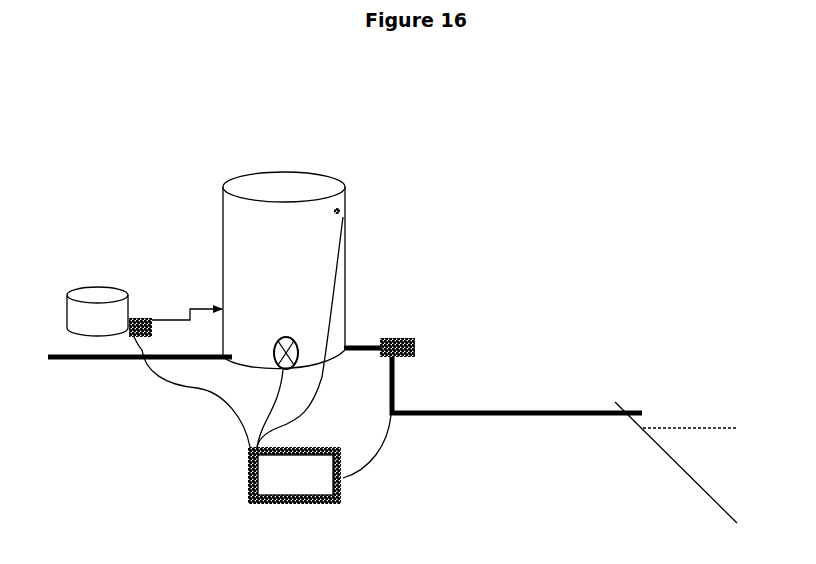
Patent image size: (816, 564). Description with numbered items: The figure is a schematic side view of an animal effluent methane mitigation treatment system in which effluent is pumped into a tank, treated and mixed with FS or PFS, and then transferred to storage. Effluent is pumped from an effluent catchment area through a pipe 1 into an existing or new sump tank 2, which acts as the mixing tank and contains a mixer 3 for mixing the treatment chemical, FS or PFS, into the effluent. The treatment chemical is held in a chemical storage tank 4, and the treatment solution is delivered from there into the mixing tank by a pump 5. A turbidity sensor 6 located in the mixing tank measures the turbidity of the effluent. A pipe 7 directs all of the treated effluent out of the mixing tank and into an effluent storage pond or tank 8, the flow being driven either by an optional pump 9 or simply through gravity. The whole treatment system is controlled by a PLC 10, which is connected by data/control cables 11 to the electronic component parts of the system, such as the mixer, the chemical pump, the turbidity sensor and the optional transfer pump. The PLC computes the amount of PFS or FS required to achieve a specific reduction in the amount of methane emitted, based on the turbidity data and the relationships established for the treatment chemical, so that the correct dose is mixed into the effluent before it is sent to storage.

The pipe 1 is at (75, 363).
The sump tank 2 is at (280, 197).
The mixer 3 is at (280, 342).
The chemical storage tank 4 is at (97, 291).
The pump 5 is at (144, 313).
The turbidity sensor 6 is at (346, 214).
The pipe 7 is at (362, 345).
The effluent storage pond(s)/tank(s) 8 is at (686, 413).
The pump 9 is at (394, 339).
The PLC 10 is at (296, 484).
The data/control cables 11 is at (203, 399).